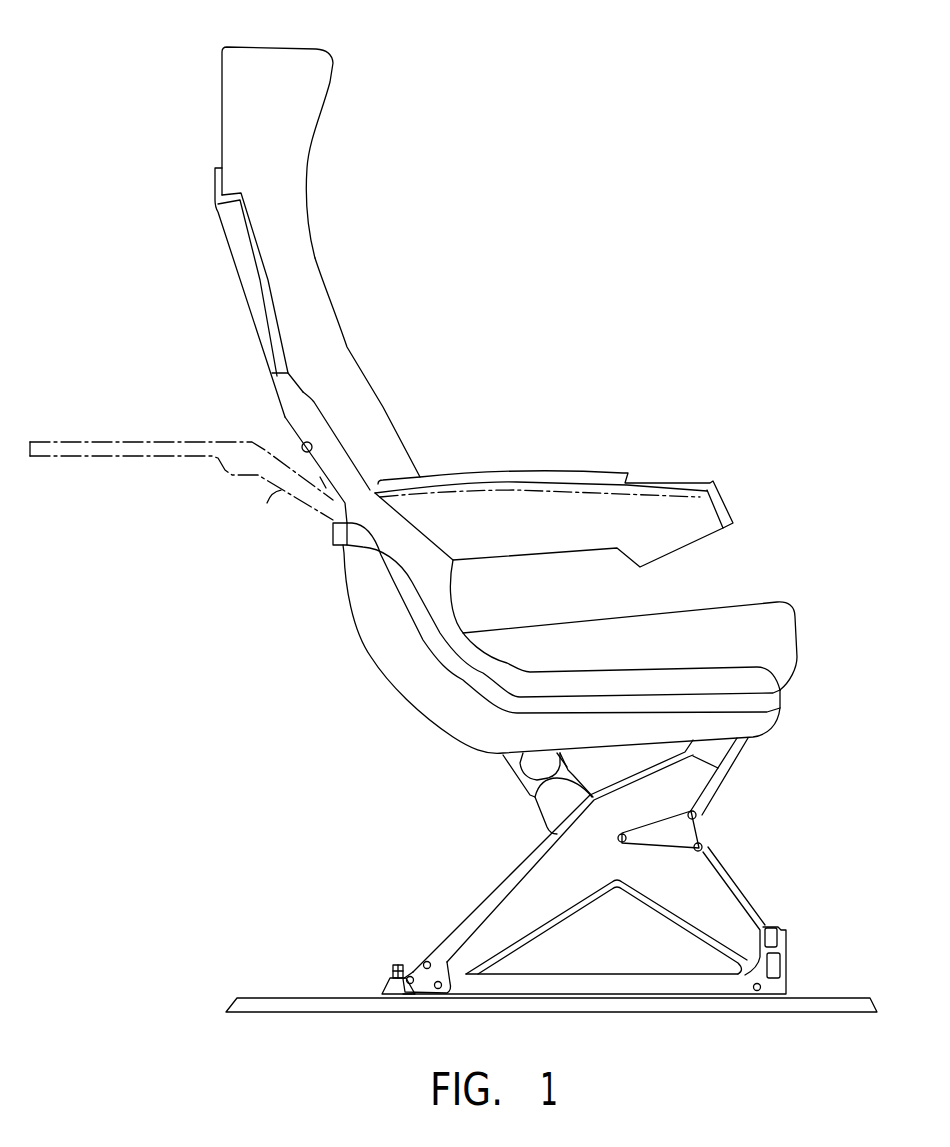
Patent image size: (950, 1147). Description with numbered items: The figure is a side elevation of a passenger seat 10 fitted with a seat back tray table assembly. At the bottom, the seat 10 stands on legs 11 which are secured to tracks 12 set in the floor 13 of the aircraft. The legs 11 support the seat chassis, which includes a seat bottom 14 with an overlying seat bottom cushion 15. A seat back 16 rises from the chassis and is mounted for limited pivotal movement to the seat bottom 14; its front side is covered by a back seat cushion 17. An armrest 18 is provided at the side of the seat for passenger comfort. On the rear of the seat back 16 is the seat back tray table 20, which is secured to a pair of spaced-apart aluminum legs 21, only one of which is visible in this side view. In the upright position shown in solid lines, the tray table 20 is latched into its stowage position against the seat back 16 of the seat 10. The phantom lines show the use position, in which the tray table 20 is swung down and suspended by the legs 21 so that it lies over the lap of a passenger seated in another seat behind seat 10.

The passenger seat 10 is at (418, 380).
The legs 11 is at (515, 898).
The tracks 12 is at (343, 997).
The floor 13 is at (355, 1012).
The seat bottom 14 is at (707, 722).
The seat bottom cushion 15 is at (778, 657).
The seat back 16 is at (236, 148).
The back seat cushion 17 is at (318, 302).
The armrest 18 is at (710, 483).
The seat back tray table 20 is at (248, 291).
The legs 21 is at (290, 412).